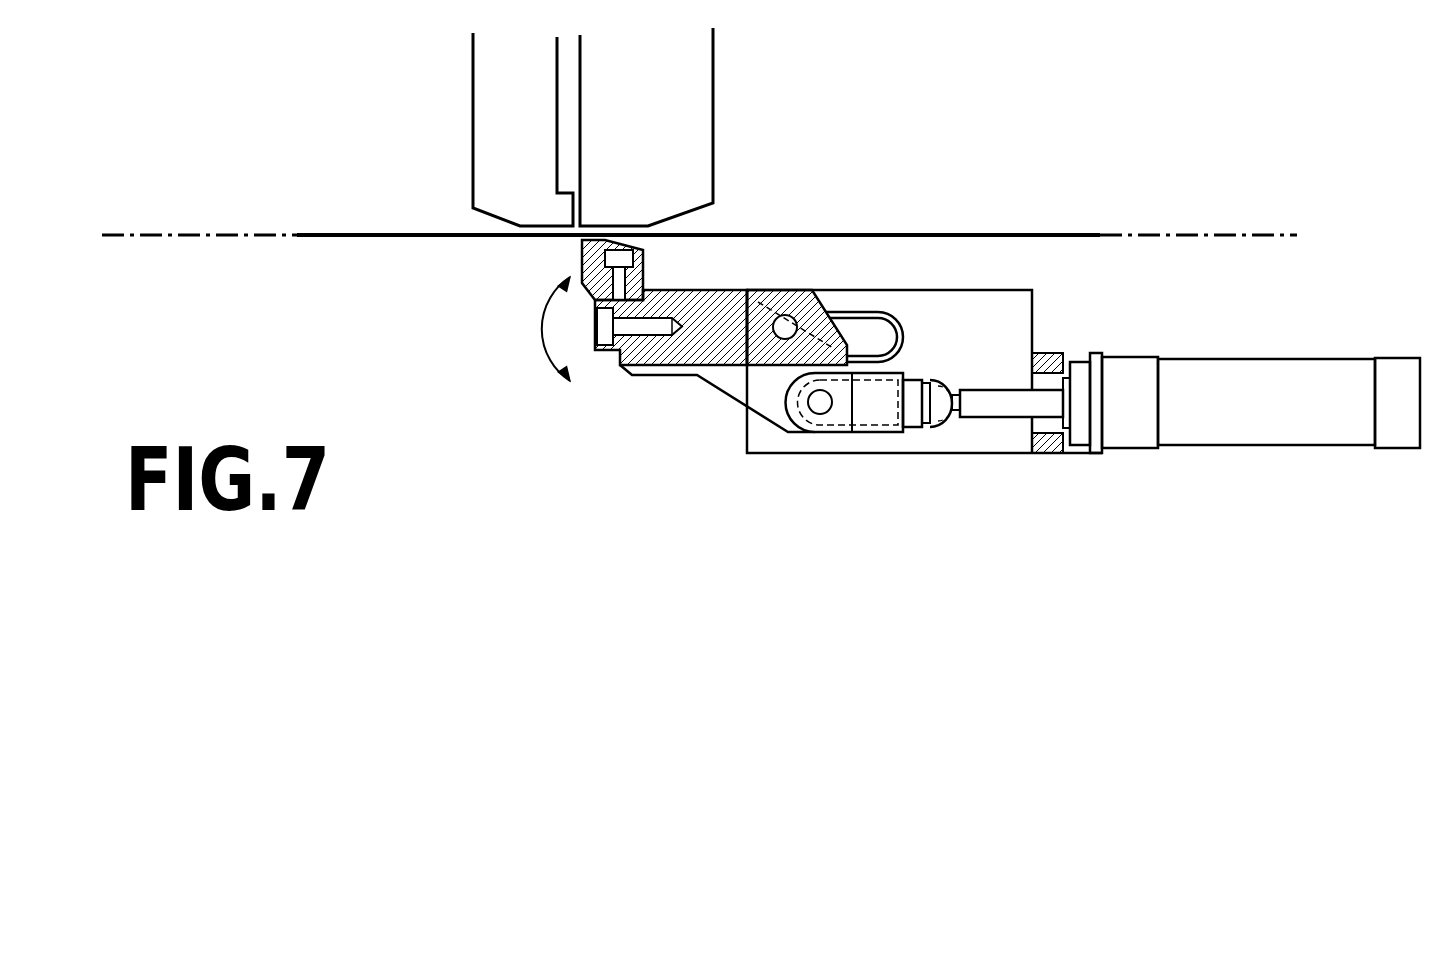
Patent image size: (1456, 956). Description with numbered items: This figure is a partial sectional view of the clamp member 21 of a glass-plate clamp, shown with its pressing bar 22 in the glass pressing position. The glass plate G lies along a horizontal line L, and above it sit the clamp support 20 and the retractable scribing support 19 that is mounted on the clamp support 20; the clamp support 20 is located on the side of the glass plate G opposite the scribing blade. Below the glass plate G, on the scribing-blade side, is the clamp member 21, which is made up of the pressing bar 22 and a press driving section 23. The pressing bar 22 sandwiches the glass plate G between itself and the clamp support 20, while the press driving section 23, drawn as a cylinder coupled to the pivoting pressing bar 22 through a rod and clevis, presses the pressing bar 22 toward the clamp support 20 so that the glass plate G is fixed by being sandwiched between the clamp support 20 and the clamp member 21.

The scribing support 19 is at (487, 108).
The clamp support 20 is at (695, 105).
The clamp member 21 is at (627, 560).
The pressing bar 22 is at (582, 247).
The press driving section 23 is at (1075, 495).
The glass plate G is at (943, 233).
The line L is at (1238, 233).